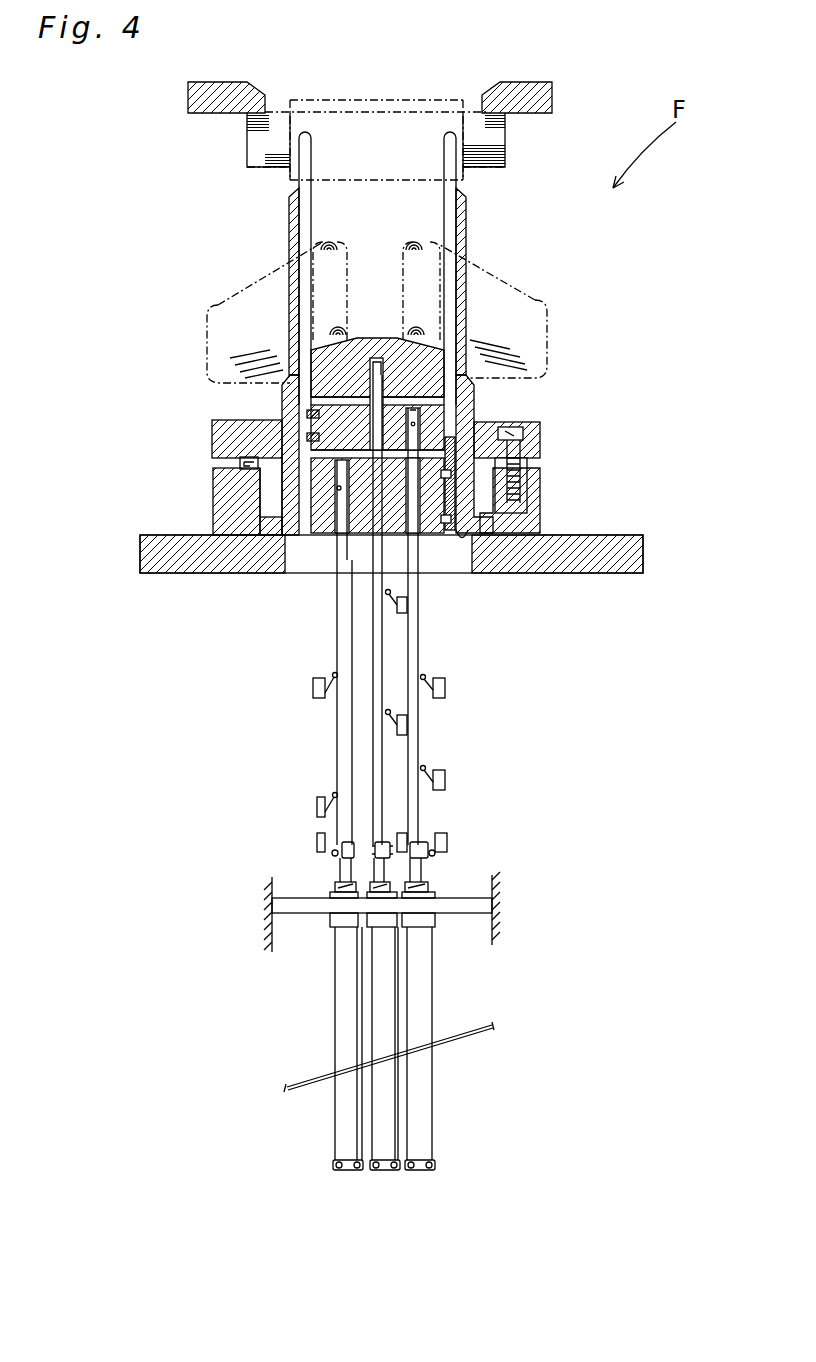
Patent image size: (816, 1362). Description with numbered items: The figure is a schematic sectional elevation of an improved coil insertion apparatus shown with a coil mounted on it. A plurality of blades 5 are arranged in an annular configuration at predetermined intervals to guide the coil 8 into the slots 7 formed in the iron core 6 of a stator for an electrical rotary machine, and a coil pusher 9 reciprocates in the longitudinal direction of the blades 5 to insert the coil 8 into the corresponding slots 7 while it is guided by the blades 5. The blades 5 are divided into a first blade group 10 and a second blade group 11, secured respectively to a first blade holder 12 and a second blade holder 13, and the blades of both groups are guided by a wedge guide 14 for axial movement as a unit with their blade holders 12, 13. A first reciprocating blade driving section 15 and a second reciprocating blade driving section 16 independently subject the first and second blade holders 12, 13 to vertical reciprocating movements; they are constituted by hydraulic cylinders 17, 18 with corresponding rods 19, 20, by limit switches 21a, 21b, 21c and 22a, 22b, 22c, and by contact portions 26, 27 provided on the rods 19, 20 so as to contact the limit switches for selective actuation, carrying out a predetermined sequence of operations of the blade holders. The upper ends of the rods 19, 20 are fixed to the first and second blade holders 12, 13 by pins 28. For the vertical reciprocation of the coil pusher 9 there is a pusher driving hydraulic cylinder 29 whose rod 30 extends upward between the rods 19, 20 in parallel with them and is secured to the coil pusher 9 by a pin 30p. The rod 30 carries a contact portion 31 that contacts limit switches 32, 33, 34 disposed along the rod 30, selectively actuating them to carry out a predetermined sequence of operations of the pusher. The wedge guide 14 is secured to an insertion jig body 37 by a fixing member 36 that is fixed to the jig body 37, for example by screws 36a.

The blades 5 is at (299, 226).
The iron core 6 is at (483, 150).
The slots 7 is at (293, 125).
The coil 8 is at (525, 312).
The coil pusher 9 is at (358, 338).
The first blade group 10 is at (299, 200).
The second blade group 11 is at (450, 248).
The first blade holder 12 is at (342, 425).
The second blade holder 13 is at (450, 530).
The wedge guide 14 is at (466, 205).
The first reciprocating blade driving section 15 is at (428, 1102).
The second reciprocating blade driving section 16 is at (335, 1097).
The hydraulic cylinder 17 is at (428, 1068).
The hydraulic cylinder 18 is at (340, 1127).
The rod 19 is at (420, 643).
The rod 20 is at (337, 723).
The limit switch 21a is at (445, 688).
The limit switch 21b is at (445, 778).
The limit switch 21c is at (447, 840).
The limit switch 22a is at (313, 680).
The limit switch 22b is at (318, 800).
The limit switch 22c is at (317, 843).
The contact portion 26 is at (432, 853).
The contact portion 27 is at (335, 853).
The pins 28 is at (430, 415).
The pusher driving hydraulic cylinder 29 is at (390, 1132).
The rod 30 is at (378, 640).
The pin 30p is at (376, 360).
The contact portion 31 is at (375, 850).
The limit switch 32 is at (407, 605).
The limit switch 33 is at (407, 725).
The limit switch 34 is at (403, 836).
The fixing member 36 is at (535, 450).
The screws 36a is at (515, 432).
The insertion jig body 37 is at (535, 495).